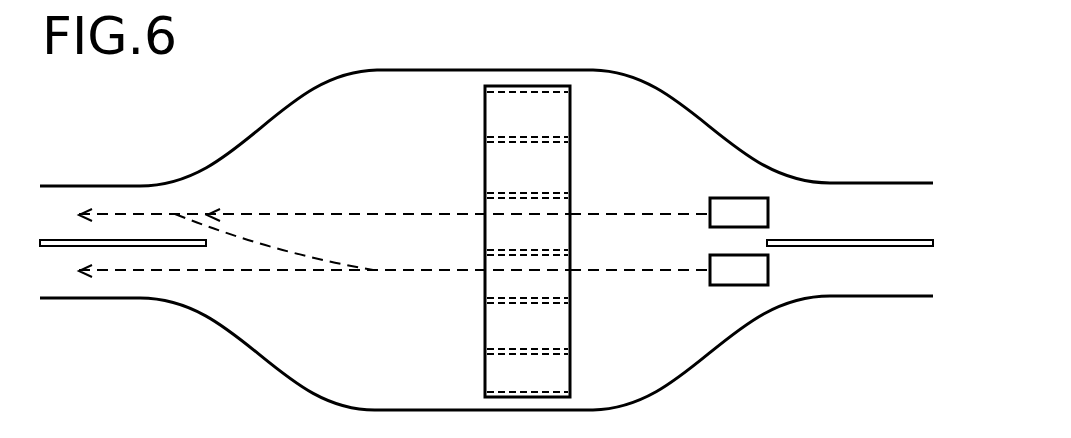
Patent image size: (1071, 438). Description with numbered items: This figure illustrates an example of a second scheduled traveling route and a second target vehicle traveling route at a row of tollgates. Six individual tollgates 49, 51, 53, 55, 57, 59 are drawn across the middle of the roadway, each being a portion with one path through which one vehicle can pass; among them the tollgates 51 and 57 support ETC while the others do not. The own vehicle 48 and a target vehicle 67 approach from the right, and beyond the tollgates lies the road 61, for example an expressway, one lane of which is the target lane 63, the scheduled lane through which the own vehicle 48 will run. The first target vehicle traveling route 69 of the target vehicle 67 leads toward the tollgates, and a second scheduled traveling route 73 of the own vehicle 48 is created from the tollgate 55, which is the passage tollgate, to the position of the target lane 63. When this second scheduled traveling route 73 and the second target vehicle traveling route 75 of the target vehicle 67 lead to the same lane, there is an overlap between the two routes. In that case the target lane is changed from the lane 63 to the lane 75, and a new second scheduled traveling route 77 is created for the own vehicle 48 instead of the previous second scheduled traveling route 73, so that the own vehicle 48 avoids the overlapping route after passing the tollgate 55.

The road 61 is at (77, 186).
The target lane 63 is at (135, 202).
The second target vehicle traveling route 75 is at (317, 213).
The new second scheduled traveling route 77 is at (290, 273).
The second scheduled traveling route 73 is at (287, 252).
The first target vehicle traveling route 69 is at (640, 211).
The target vehicle 67 is at (760, 210).
The own vehicle 48 is at (753, 268).
The tollgate 49 is at (493, 113).
The tollgate 51 is at (493, 170).
The tollgate 53 is at (500, 205).
The tollgate 55 is at (493, 279).
The tollgate 57 is at (493, 323).
The tollgate 59 is at (493, 371).